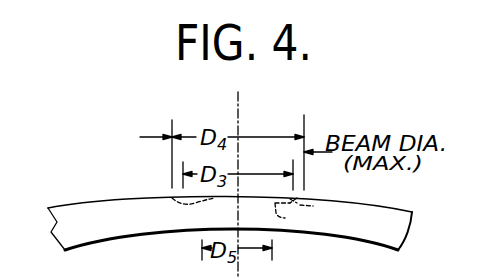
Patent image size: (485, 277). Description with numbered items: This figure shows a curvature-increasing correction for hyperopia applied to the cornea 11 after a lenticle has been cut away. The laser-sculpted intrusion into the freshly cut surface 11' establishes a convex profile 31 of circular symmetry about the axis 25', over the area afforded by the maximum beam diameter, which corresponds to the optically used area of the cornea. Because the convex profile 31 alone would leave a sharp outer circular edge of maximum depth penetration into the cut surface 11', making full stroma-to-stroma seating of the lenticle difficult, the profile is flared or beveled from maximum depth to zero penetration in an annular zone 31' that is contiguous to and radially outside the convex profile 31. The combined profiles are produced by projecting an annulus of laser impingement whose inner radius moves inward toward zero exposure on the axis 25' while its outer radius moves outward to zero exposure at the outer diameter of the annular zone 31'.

The cornea 11 is at (242, 212).
The freshly cut surface 11' is at (230, 188).
The axis 25' is at (265, 184).
The convex profile 31 is at (238, 214).
The annular zone 31' is at (325, 210).